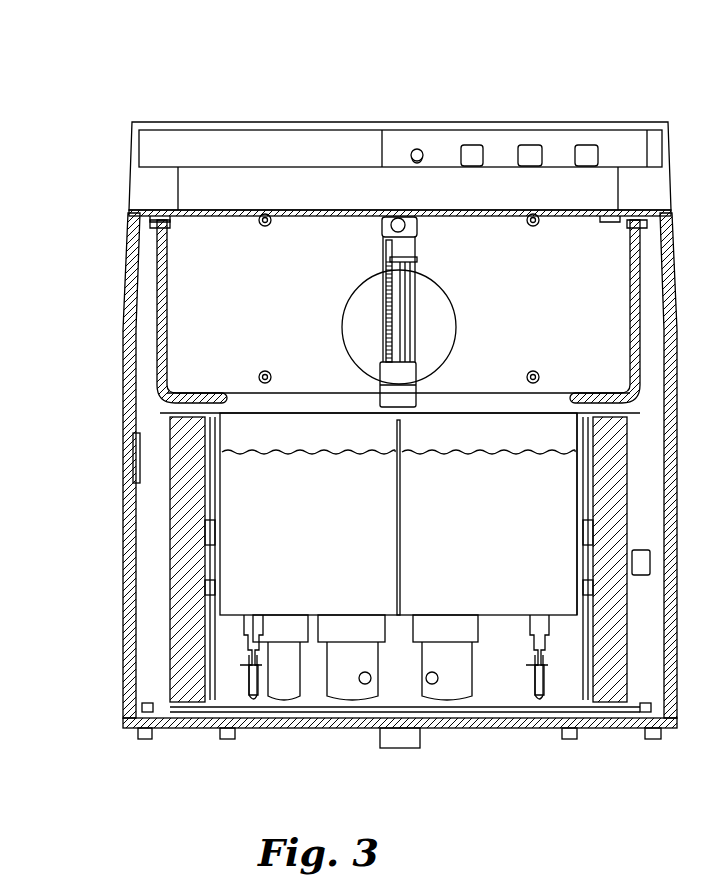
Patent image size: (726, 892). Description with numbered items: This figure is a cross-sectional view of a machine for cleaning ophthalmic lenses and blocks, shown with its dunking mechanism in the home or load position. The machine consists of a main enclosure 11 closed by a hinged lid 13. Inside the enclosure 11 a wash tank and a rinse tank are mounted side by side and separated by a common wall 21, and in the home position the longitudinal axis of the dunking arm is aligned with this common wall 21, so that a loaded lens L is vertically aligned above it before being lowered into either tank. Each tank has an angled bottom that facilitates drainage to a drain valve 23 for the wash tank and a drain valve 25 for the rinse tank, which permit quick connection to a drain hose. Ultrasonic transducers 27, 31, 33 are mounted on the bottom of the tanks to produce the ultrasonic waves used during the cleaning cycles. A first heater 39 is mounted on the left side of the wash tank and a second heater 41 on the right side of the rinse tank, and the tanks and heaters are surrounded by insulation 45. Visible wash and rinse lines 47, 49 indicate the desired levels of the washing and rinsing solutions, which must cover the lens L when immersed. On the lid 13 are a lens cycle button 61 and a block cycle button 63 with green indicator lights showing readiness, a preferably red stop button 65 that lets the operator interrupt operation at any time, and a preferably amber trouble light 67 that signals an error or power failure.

The main enclosure 11 is at (122, 590).
The hinged lid 13 is at (128, 265).
The common wall 21 is at (403, 530).
The drain valve 23 is at (263, 698).
The drain valve 25 is at (540, 692).
The ultrasonic transducer 27 is at (453, 687).
The ultrasonic transducer 31 is at (348, 690).
The ultrasonic transducer 33 is at (285, 690).
The first heater 39 is at (207, 567).
The second heater 41 is at (585, 560).
The insulation 45 is at (610, 655).
The wash line 47 is at (282, 455).
The rinse line 49 is at (472, 455).
The lens cycle button 61 is at (470, 148).
The block cycle button 63 is at (530, 148).
The stop button 65 is at (590, 148).
The trouble light 67 is at (413, 148).
The lens L is at (357, 315).